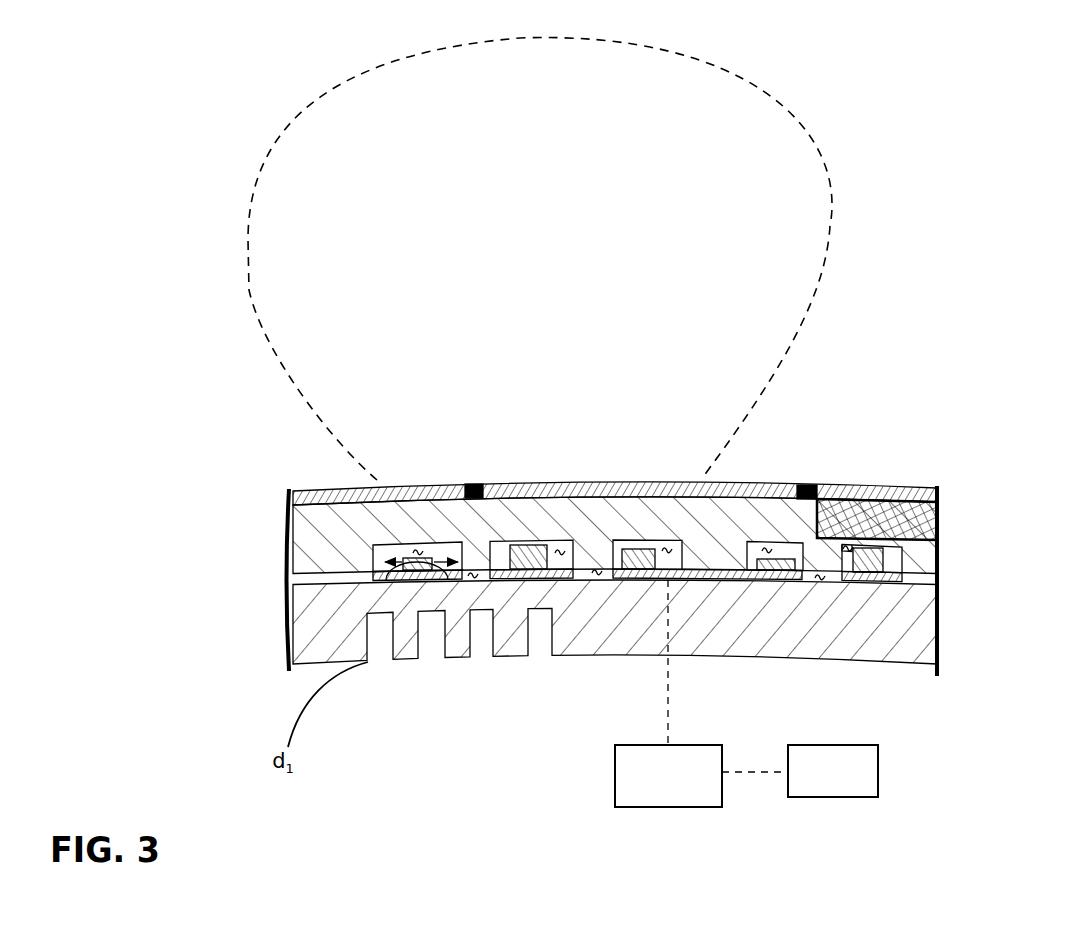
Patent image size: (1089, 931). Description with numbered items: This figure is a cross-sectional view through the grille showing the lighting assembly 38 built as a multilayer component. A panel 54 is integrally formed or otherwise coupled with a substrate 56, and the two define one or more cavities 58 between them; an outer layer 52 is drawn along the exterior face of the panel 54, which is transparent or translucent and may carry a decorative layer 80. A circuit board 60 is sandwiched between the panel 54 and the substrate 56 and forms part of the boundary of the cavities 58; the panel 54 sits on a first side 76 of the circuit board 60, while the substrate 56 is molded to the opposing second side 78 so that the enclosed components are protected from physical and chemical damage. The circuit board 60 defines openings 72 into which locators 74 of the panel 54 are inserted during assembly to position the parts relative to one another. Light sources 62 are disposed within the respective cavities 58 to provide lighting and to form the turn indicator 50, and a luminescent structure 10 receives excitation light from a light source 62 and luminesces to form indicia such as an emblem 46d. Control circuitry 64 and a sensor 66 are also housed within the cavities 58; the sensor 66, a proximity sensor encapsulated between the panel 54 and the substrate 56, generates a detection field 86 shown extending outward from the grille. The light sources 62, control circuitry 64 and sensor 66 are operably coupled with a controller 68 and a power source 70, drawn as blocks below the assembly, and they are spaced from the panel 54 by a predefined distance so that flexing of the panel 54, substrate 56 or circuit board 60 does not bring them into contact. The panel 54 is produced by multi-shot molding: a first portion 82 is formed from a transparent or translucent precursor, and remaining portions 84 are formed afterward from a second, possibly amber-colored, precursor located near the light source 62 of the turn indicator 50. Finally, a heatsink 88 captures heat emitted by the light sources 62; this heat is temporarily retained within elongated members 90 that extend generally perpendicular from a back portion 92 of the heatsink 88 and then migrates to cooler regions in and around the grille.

The luminescent structure 10 is at (491, 483).
The sensor assembly 38 is at (953, 375).
The emblem 46d is at (480, 480).
The turn indicator 50 is at (890, 557).
The outer layer 52 is at (776, 478).
The panel 54 is at (343, 540).
The substrate 56 is at (347, 627).
The cavities 58 is at (418, 548).
The circuit board 60 is at (363, 570).
The light sources 62 is at (805, 477).
The control circuitry 64 is at (352, 513).
The sensor 66 is at (527, 547).
The controller 68 is at (685, 807).
The power source 70 is at (830, 797).
The openings 72 is at (475, 580).
The locators 74 is at (470, 570).
The first side 76 is at (895, 573).
The second side 78 is at (895, 583).
The decorative layer 80 is at (873, 550).
The first portion 82 is at (322, 490).
The remaining portions 84 is at (940, 512).
The detection field 86 is at (253, 291).
The heatsink 88 is at (411, 677).
The elongated members 90 is at (333, 665).
The back portion 92 is at (457, 677).